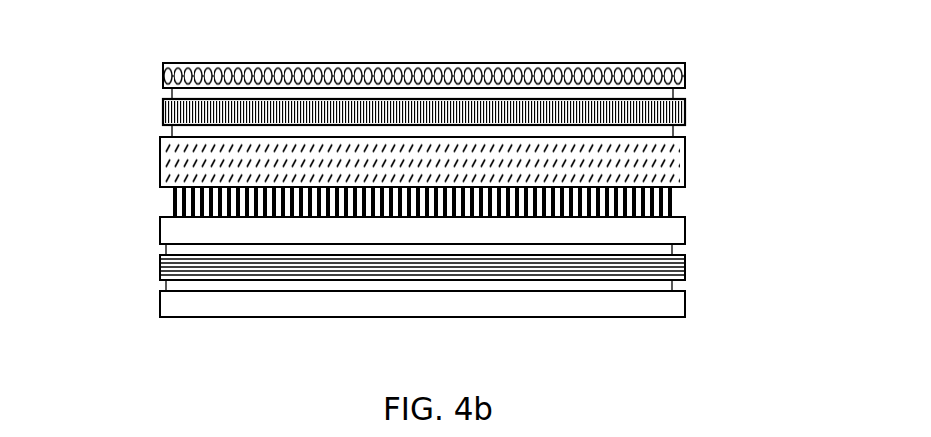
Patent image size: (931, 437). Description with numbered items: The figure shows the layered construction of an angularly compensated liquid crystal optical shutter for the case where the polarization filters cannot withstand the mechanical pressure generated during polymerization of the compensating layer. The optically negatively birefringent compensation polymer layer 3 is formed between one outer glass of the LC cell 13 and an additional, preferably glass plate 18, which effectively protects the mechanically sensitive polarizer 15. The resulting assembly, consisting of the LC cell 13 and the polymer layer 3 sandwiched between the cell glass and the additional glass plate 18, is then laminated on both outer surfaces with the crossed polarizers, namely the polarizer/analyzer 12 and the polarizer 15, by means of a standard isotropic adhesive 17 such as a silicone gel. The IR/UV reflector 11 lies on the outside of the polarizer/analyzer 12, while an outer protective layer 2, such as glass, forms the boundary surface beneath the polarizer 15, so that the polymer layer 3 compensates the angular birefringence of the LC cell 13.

The outer protective layer 2 is at (665, 305).
The optically negatively birefringent polymer layer 3 is at (665, 203).
The IR/UV reflector 11 is at (665, 78).
The polarizer/analyzer 12 is at (665, 112).
The LC cell 13 is at (668, 162).
The polarizer 15 is at (668, 273).
The standard isotropic adhesive 17 is at (192, 287).
The additional glass plate 18 is at (660, 232).